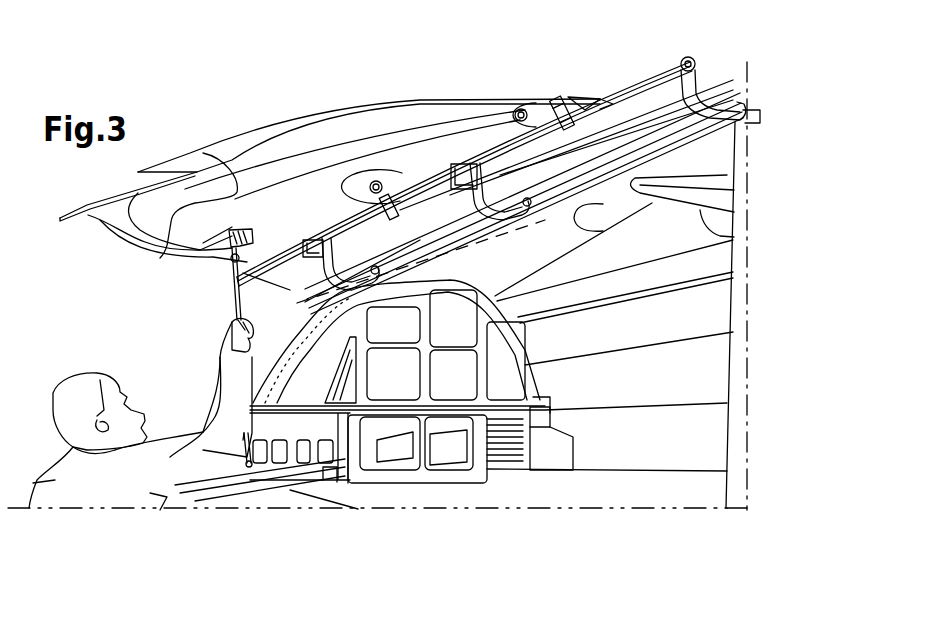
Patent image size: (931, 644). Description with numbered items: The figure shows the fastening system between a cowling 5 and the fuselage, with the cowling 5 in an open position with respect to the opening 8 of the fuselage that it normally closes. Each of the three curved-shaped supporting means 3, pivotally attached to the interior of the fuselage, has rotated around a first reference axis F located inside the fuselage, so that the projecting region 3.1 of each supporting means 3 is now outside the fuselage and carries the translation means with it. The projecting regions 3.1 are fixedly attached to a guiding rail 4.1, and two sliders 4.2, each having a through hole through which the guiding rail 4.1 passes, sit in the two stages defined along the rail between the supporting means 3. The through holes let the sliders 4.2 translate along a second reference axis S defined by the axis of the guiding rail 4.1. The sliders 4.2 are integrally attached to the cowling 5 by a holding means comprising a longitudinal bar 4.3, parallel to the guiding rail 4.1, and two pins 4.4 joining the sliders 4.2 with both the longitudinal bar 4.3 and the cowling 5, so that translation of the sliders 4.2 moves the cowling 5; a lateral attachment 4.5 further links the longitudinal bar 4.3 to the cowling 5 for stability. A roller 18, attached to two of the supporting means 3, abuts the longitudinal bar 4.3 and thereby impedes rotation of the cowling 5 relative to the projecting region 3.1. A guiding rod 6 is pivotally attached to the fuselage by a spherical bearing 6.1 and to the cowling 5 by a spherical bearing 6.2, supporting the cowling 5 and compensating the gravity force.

The supporting means 3 is at (283, 278).
The projecting region 3.1 is at (706, 61).
The guiding rail 4.1 is at (630, 93).
The slider 4.2 is at (362, 197).
The longitudinal bar 4.3 is at (447, 168).
The pin 4.4 is at (378, 180).
The lateral attachment 4.5 is at (231, 262).
The cowling 5 is at (246, 120).
The guiding rod 6 is at (233, 314).
The spherical bearing 6.1 is at (220, 425).
The spherical bearing 6.2 is at (229, 236).
The opening 8 is at (688, 372).
The roller 18 is at (458, 163).
The second reference axis S is at (694, 63).
The first reference axis F is at (600, 187).